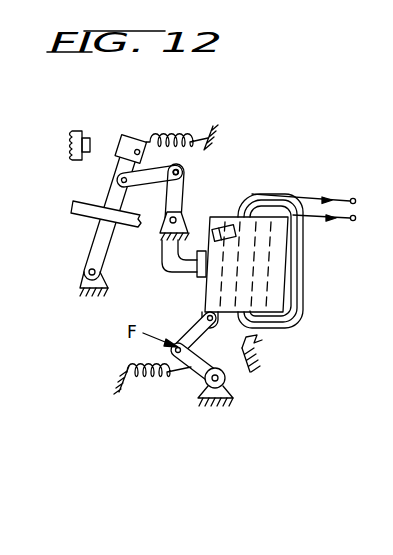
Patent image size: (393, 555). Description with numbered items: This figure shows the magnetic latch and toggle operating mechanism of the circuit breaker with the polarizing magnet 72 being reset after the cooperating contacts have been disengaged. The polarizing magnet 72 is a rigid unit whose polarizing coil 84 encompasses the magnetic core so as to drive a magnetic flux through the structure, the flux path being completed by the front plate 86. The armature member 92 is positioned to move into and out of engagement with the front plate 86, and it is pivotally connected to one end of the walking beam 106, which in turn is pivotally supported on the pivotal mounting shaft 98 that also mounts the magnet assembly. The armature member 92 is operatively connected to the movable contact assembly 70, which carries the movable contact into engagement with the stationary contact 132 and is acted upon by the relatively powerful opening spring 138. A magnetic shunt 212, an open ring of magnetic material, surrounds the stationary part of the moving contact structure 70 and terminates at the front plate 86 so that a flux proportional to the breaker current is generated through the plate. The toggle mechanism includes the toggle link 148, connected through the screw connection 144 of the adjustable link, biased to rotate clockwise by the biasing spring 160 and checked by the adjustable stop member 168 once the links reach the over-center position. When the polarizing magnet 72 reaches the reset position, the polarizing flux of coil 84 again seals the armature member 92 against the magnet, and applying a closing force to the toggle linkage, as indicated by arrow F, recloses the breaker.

The stationary contact 132 is at (86, 131).
The opening spring 138 is at (170, 135).
The pivotal mounting shaft 98 is at (183, 221).
The magnetic shunt 212 is at (84, 219).
The movable contact assembly 70 is at (94, 254).
The walking beam 106 is at (170, 255).
The armature member 92 is at (196, 270).
The front plate 86 is at (210, 289).
The polarizing coil 84 is at (305, 268).
The toggle link 148 is at (200, 334).
The polarizing magnet 72 is at (228, 312).
The screw connection 144 is at (200, 369).
The biasing spring 160 is at (164, 369).
The adjustable stop member 168 is at (254, 364).